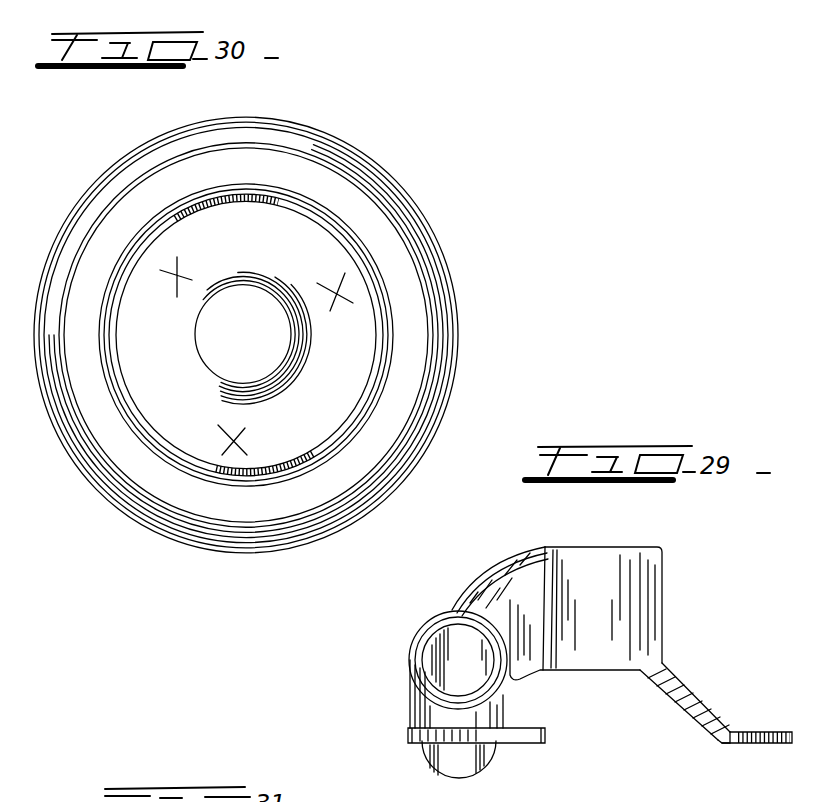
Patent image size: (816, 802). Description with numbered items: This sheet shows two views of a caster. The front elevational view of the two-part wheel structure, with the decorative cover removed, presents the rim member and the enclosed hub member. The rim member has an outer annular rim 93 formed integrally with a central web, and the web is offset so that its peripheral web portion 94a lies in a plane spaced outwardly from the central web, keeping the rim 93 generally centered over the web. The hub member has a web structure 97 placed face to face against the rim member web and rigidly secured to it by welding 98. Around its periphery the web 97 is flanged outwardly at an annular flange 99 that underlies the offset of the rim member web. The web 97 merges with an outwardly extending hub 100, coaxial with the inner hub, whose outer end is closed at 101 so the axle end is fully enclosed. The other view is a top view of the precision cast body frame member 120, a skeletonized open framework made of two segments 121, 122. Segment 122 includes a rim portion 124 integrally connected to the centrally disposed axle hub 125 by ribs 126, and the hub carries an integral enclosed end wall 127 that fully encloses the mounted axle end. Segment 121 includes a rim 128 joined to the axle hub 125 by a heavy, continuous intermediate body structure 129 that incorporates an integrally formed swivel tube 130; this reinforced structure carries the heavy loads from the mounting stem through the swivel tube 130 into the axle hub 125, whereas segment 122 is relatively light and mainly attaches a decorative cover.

In FIG. 30, the outer annular rim 93 is at (341, 161).
In FIG. 30, the offset web portion 94a is at (362, 232).
In FIG. 30, the web structure 97 is at (366, 372).
In FIG. 30, the welding 98 is at (340, 296).
In FIG. 30, the outwardly extending annular flange 99 is at (156, 430).
In FIG. 30, the outwardly extending hub 100 is at (224, 292).
In FIG. 30, the closed hub end 101 is at (255, 318).
In FIG. 29, the precision cast body frame member 120 is at (532, 542).
In FIG. 29, the segment 121 is at (410, 705).
In FIG. 29, the segment 122 is at (722, 745).
In FIG. 29, the rim portion 124 is at (737, 748).
In FIG. 29, the axle hub 125 is at (655, 597).
In FIG. 29, the ribs 126 is at (710, 710).
In FIG. 29, the enclosed end wall 127 is at (603, 549).
In FIG. 29, the rim 128 is at (512, 745).
In FIG. 29, the intermediate body structure 129 is at (497, 590).
In FIG. 29, the swivel tube 130 is at (411, 655).